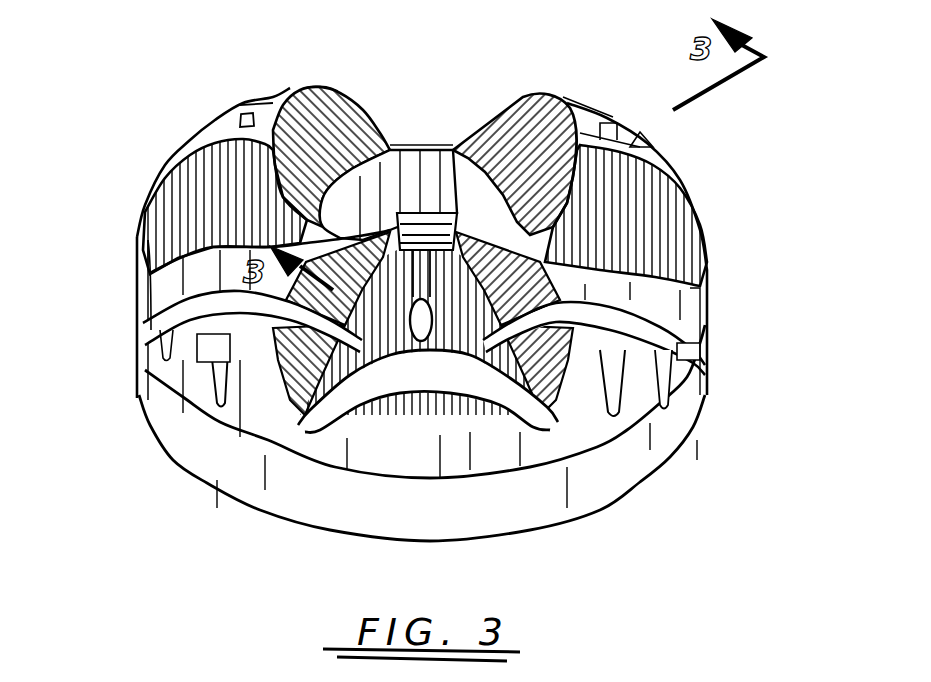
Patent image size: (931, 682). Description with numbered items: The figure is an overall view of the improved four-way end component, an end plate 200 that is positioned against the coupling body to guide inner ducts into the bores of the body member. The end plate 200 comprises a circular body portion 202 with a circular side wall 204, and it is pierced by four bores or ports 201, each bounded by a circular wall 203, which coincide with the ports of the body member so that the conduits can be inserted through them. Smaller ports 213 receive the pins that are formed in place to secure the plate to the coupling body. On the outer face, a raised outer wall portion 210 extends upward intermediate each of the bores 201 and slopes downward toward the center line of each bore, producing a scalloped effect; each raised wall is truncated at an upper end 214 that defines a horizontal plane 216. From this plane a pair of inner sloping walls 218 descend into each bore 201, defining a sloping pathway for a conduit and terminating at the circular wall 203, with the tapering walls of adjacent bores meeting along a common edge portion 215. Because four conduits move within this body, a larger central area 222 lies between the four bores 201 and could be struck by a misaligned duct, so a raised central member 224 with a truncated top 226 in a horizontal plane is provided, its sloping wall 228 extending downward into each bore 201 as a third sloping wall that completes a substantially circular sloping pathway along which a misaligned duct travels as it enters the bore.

The end plate 200 is at (447, 123).
The port 201 is at (370, 92).
The circular body portion 202 is at (670, 400).
The circular wall of bore 203 is at (147, 244).
The circular side wall 204 is at (247, 483).
The raised outer wall portion 210 is at (193, 353).
The port 213 is at (213, 347).
The truncated upper end 214 is at (587, 112).
The common edge portion 215 is at (565, 312).
The horizontal plane 216 is at (650, 140).
The sloping wall 218 is at (228, 178).
The central area 222 is at (419, 205).
The raised central member 224 is at (446, 350).
The truncated top 226 is at (447, 205).
The sloping wall 228 is at (312, 88).